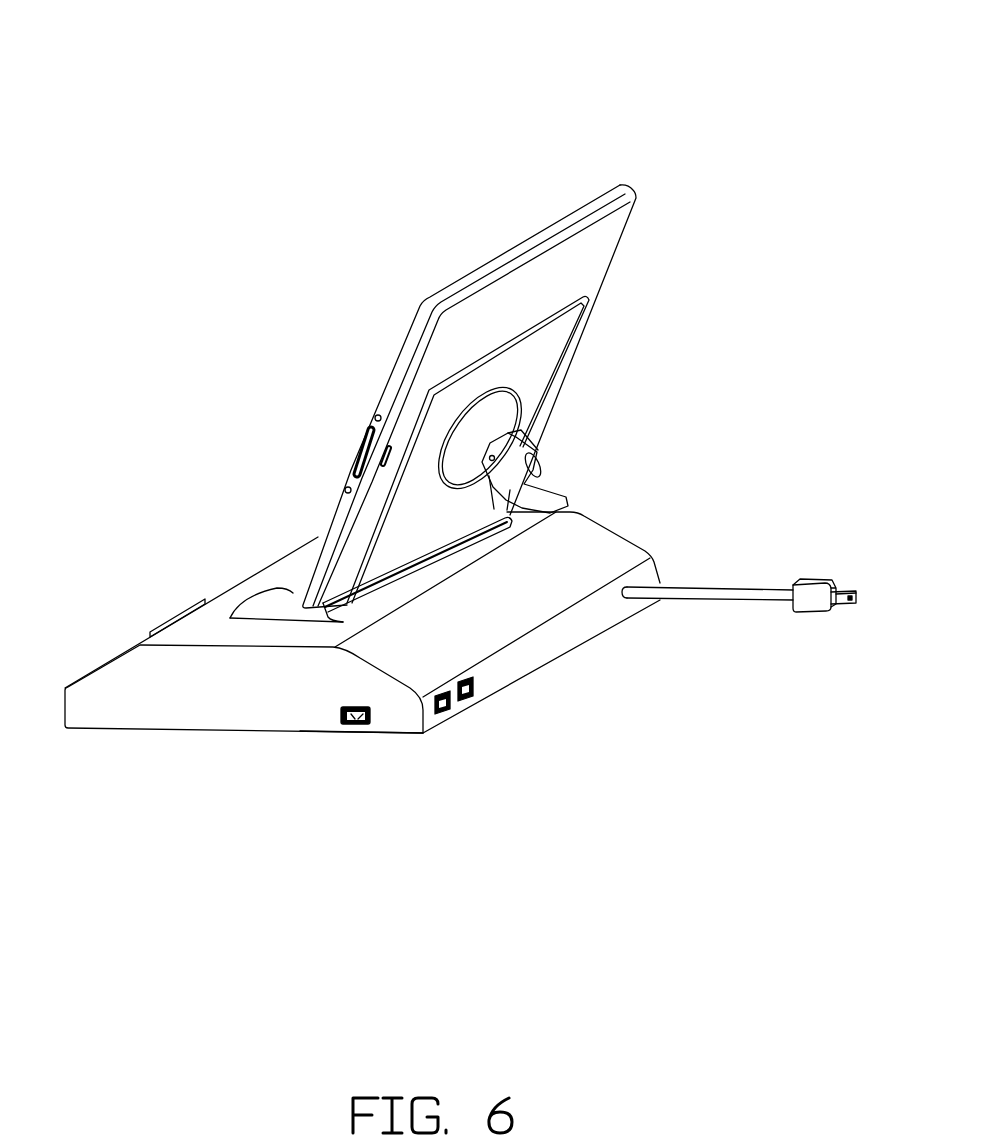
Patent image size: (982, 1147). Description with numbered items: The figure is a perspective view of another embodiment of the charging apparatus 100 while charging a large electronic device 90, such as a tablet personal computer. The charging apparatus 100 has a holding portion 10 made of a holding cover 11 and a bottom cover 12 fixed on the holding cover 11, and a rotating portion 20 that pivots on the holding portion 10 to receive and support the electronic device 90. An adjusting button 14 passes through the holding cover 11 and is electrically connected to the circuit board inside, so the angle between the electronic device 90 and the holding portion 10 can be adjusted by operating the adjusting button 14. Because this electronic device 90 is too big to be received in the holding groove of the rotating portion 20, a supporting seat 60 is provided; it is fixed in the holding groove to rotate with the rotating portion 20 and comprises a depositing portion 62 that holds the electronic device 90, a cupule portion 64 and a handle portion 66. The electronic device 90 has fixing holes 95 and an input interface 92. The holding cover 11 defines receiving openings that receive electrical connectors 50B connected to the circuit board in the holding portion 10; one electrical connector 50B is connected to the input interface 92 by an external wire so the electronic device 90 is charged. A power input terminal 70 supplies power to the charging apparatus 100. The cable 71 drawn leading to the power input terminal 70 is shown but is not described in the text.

The charging apparatus 100 is at (490, 43).
The holding portion 10 is at (378, 820).
The holding cover 11 is at (232, 710).
The bottom cover 12 is at (393, 787).
The adjusting button 14 is at (165, 622).
The electrical connector 50B is at (353, 725).
The rotating portion 20 is at (277, 582).
The electronic device 90 is at (445, 330).
The input interface 92 is at (357, 448).
The fixing holes 95 is at (347, 488).
The supporting seat 60 is at (733, 452).
The depositing portion 62 is at (697, 350).
The cupule portion 64 is at (697, 398).
The handle portion 66 is at (697, 445).
The cable 71 is at (713, 593).
The power input terminal 70 is at (810, 592).